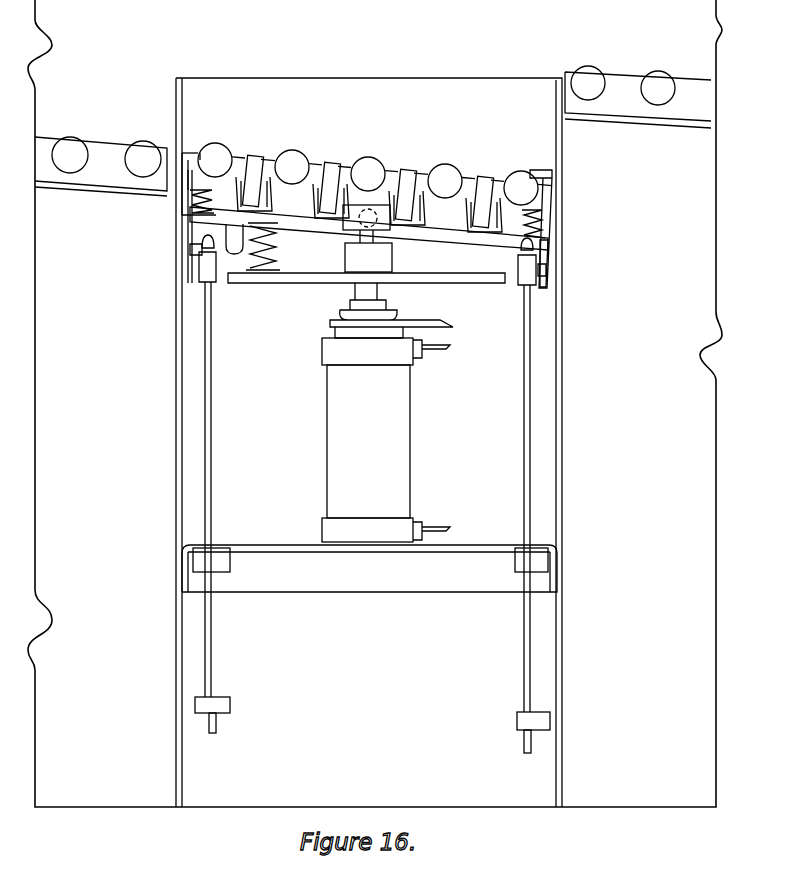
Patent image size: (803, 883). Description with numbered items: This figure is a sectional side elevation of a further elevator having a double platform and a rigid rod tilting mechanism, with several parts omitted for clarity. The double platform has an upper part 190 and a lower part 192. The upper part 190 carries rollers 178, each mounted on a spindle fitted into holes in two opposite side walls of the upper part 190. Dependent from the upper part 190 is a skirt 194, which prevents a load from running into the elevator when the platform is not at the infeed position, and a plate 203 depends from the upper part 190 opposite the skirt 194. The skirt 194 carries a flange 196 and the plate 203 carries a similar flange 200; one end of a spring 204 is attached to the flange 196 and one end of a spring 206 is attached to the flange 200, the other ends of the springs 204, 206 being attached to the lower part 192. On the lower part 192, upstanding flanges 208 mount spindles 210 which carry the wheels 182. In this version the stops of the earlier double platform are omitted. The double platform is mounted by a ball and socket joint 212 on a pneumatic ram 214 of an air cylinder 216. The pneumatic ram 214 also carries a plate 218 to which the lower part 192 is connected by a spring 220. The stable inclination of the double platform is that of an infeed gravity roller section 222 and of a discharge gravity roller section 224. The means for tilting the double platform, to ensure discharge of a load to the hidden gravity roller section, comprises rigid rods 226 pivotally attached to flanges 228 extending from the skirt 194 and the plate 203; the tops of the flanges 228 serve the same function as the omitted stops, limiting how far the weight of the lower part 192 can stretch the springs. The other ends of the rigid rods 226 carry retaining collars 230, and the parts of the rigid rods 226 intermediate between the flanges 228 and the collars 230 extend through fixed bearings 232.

The rollers 178 is at (215, 160).
The wheels 182 is at (254, 165).
The upper part 190 is at (190, 153).
The lower part 192 is at (447, 228).
The skirt 194 is at (185, 289).
The flange 196 is at (188, 185).
The flange 200 is at (548, 203).
The plate 203 is at (547, 246).
The spring 204 is at (193, 192).
The spring 206 is at (550, 224).
The upstanding flanges 208 is at (265, 210).
The spindles 210 is at (423, 186).
The ball and socket joint 212 is at (396, 243).
The pneumatic ram 214 is at (360, 237).
The air cylinder 216 is at (386, 440).
The plate 218 is at (292, 283).
The spring 220 is at (253, 275).
The infeed gravity roller section 222 is at (109, 158).
The discharge gravity roller section 224 is at (630, 100).
The rigid rods 226 is at (211, 425).
The flanges 228 is at (192, 250).
The retaining collars 230 is at (220, 703).
The fixed bearings 232 is at (217, 563).